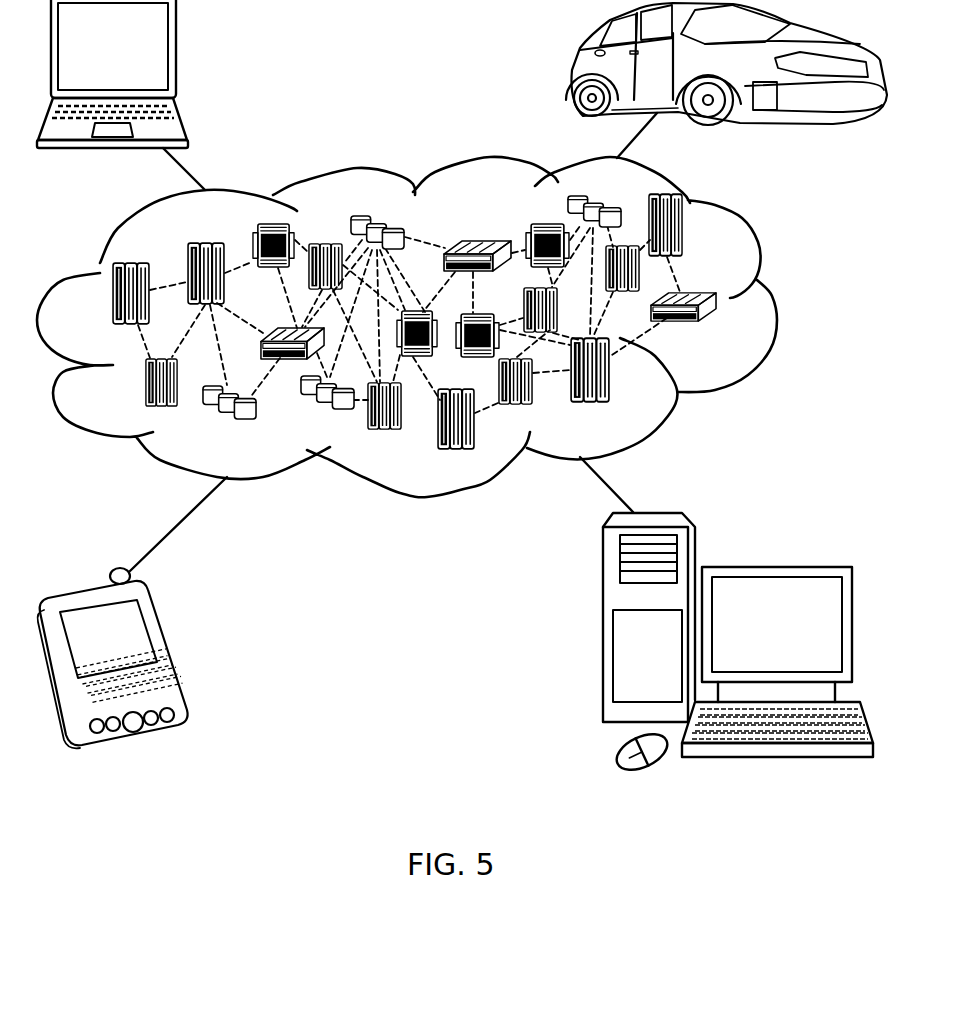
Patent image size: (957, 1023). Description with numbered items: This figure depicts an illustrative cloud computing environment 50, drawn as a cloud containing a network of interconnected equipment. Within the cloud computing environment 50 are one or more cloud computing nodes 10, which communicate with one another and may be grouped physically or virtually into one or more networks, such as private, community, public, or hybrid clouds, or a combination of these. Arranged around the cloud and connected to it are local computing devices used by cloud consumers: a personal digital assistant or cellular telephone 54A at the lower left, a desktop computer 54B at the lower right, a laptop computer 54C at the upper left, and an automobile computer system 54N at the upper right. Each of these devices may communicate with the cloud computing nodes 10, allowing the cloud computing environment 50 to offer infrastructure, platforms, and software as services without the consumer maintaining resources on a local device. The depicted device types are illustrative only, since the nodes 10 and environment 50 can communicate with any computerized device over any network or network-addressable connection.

The cloud computing node 10 is at (730, 332).
The cloud computing environment 50 is at (777, 302).
The personal digital assistant (PDA) or cellular telephone 54A is at (170, 652).
The desktop computer 54B is at (772, 565).
The laptop computer 54C is at (177, 53).
The automobile computer system 54N is at (577, 68).